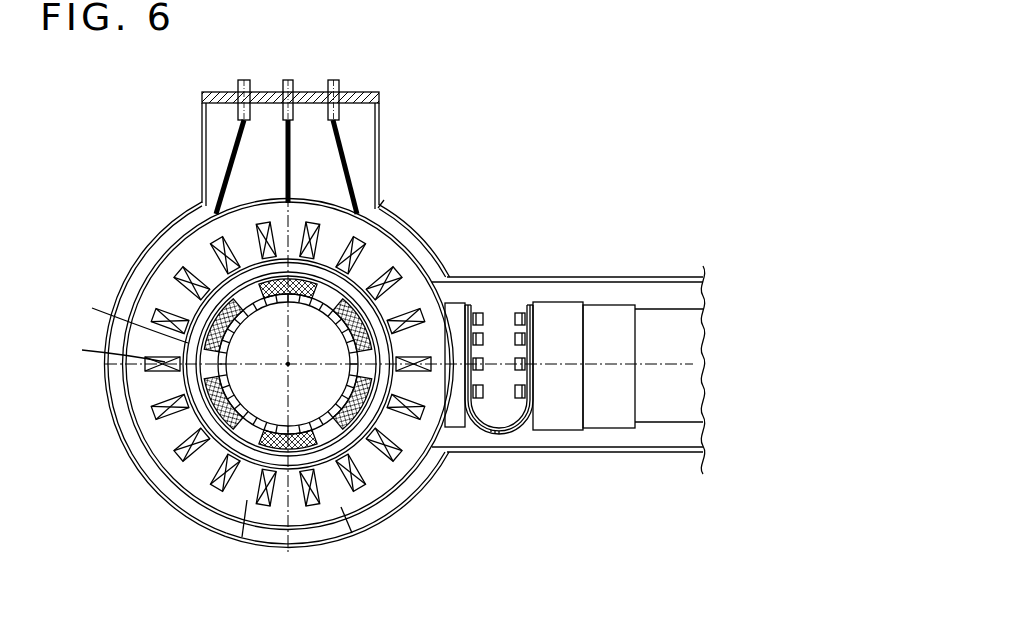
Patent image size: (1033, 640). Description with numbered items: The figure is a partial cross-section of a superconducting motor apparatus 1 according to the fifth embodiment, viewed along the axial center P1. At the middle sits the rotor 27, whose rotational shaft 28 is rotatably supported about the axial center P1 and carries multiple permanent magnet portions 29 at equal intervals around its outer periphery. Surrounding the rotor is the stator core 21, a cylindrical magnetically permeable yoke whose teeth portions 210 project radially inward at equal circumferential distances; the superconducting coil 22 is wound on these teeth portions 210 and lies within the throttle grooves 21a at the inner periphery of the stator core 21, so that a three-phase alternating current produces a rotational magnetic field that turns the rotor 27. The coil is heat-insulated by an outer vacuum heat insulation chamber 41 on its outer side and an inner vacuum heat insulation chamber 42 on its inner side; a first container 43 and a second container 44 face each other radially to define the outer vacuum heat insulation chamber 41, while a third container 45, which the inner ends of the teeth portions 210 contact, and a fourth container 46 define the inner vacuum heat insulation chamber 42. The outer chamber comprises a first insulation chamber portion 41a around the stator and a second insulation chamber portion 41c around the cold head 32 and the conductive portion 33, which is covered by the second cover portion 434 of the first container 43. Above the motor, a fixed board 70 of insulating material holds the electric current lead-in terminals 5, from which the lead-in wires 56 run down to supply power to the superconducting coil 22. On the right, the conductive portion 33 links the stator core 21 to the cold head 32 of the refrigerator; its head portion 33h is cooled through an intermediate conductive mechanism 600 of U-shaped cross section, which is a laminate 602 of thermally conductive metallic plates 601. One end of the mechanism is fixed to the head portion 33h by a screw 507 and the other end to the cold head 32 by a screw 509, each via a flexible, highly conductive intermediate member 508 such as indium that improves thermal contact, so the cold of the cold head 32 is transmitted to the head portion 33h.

The superconducting motor apparatus 1 is at (131, 249).
The electric current lead-in terminal 5 is at (238, 88).
The fixed board 70 is at (352, 92).
The three-phase electric current lead-in wire 56 is at (234, 140).
The outer vacuum heat insulation chamber 41 is at (187, 228).
The first insulation chamber portion 41a is at (326, 536).
The second insulation chamber portion 41c is at (695, 283).
The teeth portion 210 is at (290, 258).
The stator core 21 is at (313, 467).
The throttle groove 21a is at (372, 495).
The superconducting coil 22 is at (372, 470).
The rotor 27 is at (345, 298).
The rotational shaft 28 is at (229, 372).
The permanent magnet portion 29 is at (362, 304).
The axial center P1 is at (290, 364).
The inner vacuum heat insulation chamber 42 is at (257, 452).
The first container 43 is at (142, 503).
The second container 44 is at (122, 444).
The third container 45 is at (106, 349).
The fourth container 46 is at (122, 318).
The conductive portion 33 is at (460, 440).
The head portion 33h is at (454, 318).
The screw 507 is at (486, 318).
The intermediate member 508 is at (480, 314).
The screw 509 is at (523, 312).
The cold head 32 is at (624, 330).
The intermediate conductive mechanism 600 is at (507, 438).
The metallic plate 601 is at (500, 440).
The laminate 602 is at (492, 440).
The second cover portion 434 is at (650, 453).